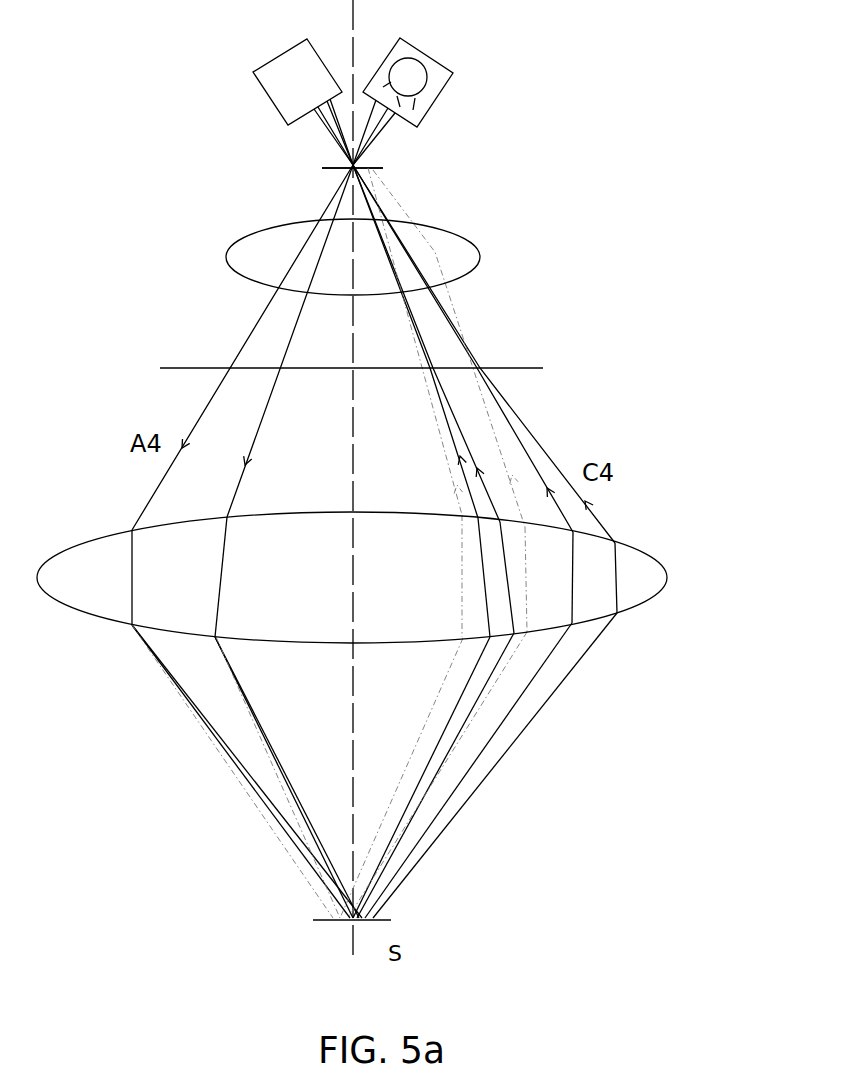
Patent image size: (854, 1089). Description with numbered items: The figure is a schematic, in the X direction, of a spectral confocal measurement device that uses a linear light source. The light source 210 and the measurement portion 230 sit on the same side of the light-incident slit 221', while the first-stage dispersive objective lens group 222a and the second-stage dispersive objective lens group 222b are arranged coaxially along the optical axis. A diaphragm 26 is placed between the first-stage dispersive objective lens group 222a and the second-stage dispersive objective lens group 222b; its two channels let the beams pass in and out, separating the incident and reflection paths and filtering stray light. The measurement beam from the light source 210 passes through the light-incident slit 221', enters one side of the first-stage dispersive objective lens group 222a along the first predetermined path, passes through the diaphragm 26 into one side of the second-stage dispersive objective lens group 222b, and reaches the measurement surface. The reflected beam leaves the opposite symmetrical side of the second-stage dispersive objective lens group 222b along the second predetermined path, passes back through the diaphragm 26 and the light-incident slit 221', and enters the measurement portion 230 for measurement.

The measurement portion 230 is at (265, 72).
The light source 210 is at (420, 50).
The light-incident slit 221' is at (437, 148).
The first-stage dispersive objective lens group 222a is at (463, 255).
The diaphragm 26 is at (527, 367).
The second-stage dispersive objective lens group 222b is at (640, 568).